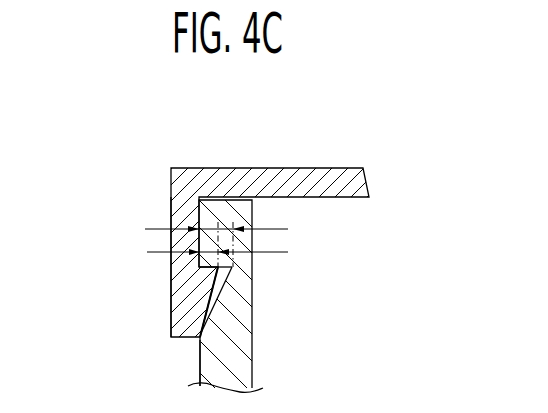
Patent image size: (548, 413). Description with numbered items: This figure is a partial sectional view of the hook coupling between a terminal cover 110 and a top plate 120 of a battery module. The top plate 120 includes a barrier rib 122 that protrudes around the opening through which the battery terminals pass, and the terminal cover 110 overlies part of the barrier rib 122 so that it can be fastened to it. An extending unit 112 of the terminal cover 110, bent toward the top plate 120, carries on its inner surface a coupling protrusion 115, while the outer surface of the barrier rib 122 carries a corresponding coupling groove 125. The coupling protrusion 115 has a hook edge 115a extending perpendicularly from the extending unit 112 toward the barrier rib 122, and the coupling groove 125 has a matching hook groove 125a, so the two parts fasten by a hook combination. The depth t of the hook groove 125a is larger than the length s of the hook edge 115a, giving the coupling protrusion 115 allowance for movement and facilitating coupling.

The terminal cover 110 is at (168, 191).
The extending unit 112 is at (180, 278).
The coupling protrusion 115 is at (210, 307).
The hook edge 115a is at (218, 266).
The top plate 120 is at (190, 360).
The barrier rib 122 is at (240, 360).
The coupling groove 125 is at (222, 279).
The hook groove 125a is at (232, 267).